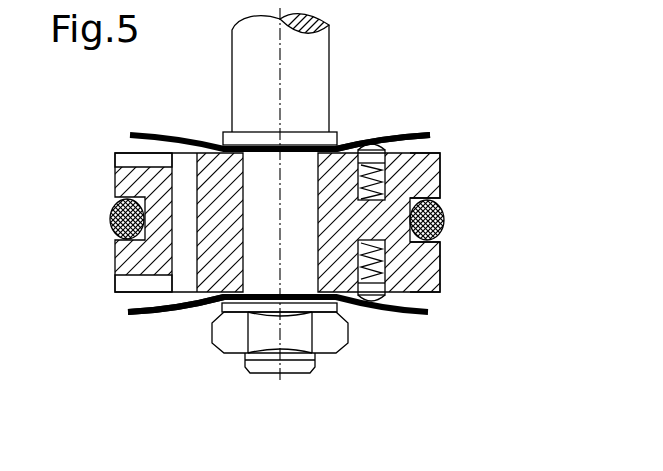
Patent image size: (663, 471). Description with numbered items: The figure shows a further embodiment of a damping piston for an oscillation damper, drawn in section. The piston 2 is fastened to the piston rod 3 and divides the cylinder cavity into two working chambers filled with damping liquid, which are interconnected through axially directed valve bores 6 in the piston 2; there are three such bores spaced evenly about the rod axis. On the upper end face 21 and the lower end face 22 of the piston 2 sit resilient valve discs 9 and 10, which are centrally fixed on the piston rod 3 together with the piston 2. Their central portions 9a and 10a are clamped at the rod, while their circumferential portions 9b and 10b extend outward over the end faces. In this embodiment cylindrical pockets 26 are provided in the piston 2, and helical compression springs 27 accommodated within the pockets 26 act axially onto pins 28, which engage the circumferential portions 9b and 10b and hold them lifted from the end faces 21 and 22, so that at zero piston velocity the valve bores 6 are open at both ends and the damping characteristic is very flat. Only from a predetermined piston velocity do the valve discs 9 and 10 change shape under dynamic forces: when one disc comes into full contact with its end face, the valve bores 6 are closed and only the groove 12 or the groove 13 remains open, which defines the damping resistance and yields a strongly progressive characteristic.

The piston 2 is at (442, 195).
The piston rod 3 is at (312, 90).
The valve bores 6 is at (180, 247).
The upper valve disc 9 is at (196, 140).
The central portion of upper valve disc 9a is at (263, 147).
The circumferential portion of upper valve disc 9b is at (413, 130).
The lower valve disc 10 is at (128, 314).
The central portion of lower valve disc 10a is at (320, 300).
The circumferential portion of lower valve disc 10b is at (170, 315).
The groove 12 is at (140, 157).
The groove 13 is at (135, 286).
The upper end face of piston 21 is at (430, 150).
The lower end face of piston 22 is at (425, 293).
The cylindrical pockets 26 is at (415, 178).
The helical compression springs 27 is at (413, 175).
The pins 28 is at (365, 148).